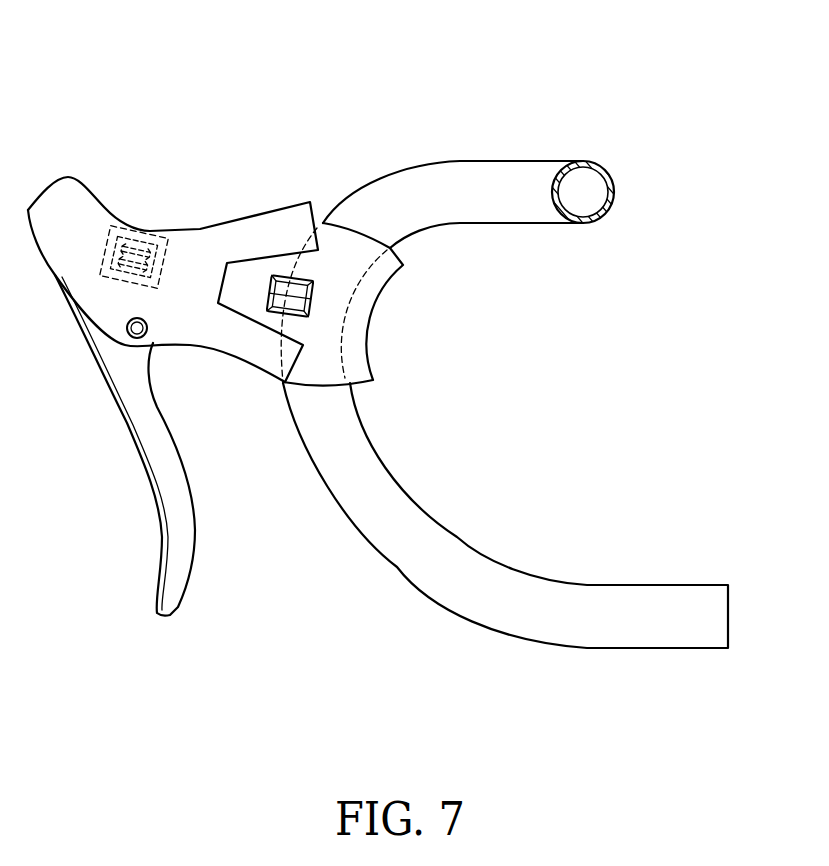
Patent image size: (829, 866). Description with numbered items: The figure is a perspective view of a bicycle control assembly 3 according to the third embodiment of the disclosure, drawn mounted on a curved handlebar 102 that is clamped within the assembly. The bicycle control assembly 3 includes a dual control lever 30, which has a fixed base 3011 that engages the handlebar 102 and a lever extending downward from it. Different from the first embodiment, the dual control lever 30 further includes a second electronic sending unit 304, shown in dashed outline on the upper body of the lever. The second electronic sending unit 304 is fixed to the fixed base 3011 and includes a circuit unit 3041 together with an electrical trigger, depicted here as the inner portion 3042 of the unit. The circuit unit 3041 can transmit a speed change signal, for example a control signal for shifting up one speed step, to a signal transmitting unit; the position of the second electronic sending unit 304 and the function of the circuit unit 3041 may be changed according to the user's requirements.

The bicycle control assembly 3 is at (60, 46).
The dual control lever 30 is at (223, 198).
The second electronic sending unit 304 is at (180, 120).
The circuit unit 3041 is at (107, 247).
The second positioning portion 3042 is at (134, 252).
The fixed base 3011 is at (287, 227).
The handlebar 102 is at (355, 318).